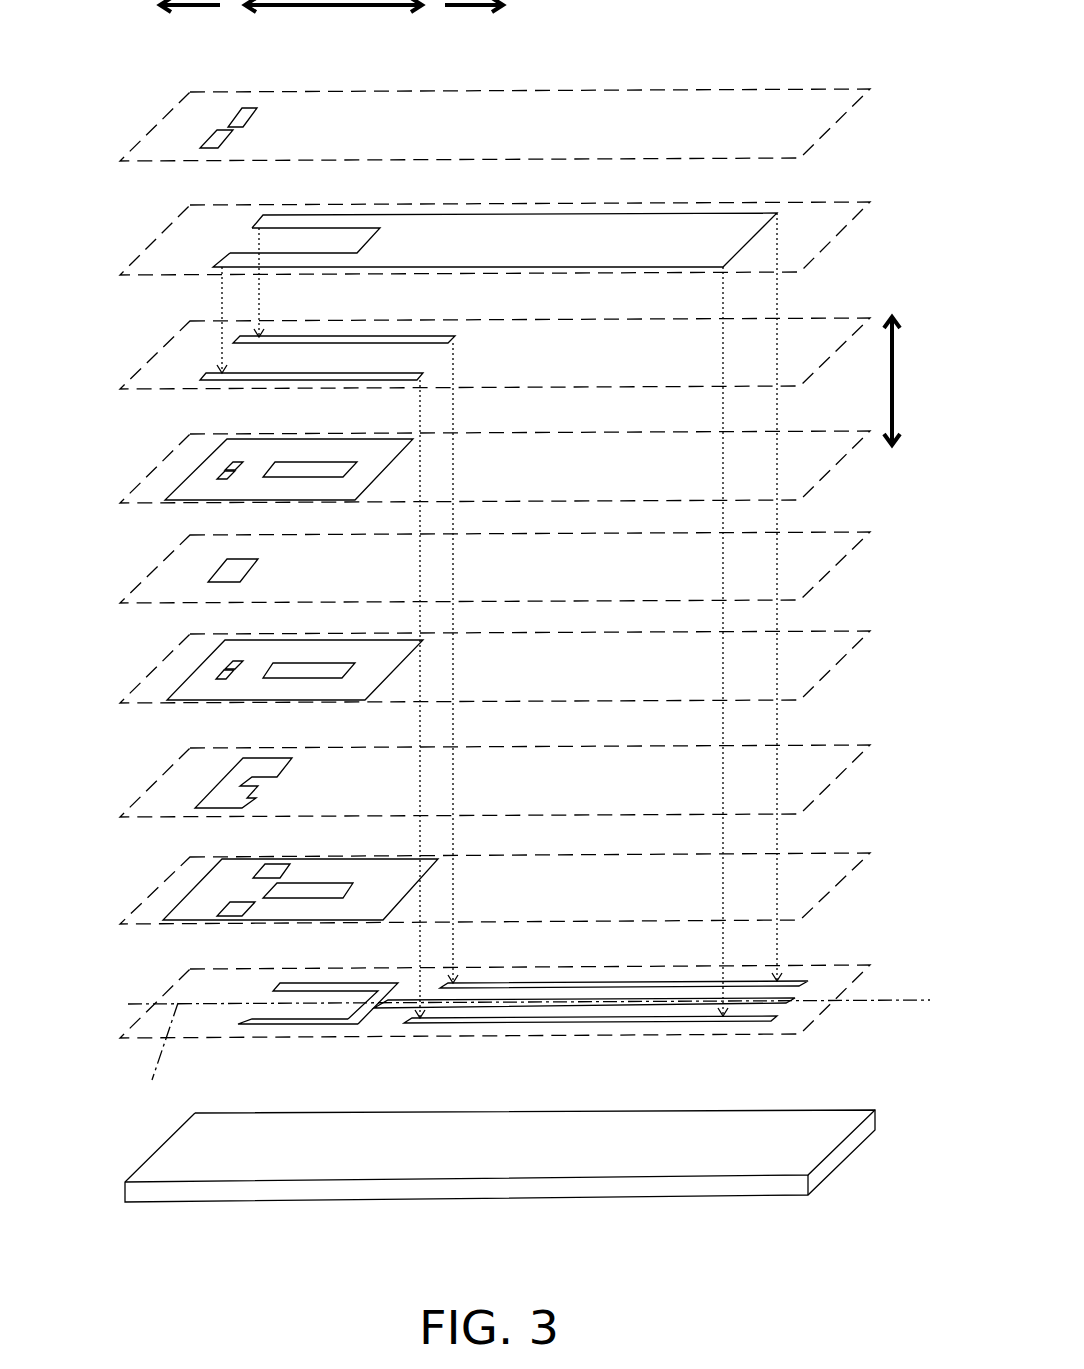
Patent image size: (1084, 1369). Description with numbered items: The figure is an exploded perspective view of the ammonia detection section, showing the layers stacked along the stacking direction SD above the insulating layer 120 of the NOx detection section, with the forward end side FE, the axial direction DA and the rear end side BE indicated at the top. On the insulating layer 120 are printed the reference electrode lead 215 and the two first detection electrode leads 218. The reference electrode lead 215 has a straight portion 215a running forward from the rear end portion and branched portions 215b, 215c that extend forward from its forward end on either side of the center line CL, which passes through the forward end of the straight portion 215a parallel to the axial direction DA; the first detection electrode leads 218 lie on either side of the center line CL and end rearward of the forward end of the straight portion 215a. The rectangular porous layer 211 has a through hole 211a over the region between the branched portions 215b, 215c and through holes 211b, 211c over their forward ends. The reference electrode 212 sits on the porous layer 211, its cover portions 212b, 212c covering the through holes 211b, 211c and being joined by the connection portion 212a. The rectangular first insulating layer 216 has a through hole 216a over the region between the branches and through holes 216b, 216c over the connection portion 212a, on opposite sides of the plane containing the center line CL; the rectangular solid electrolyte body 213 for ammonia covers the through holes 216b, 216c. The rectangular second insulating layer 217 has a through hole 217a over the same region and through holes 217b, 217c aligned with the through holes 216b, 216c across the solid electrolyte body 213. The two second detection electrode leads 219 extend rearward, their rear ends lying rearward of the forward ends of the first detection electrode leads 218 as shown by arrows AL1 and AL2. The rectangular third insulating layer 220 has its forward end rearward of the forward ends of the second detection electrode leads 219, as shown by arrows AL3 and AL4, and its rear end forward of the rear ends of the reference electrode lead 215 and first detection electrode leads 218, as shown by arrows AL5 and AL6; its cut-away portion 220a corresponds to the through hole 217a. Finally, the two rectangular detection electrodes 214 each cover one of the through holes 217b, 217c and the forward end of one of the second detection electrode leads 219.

The insulating layer 120 is at (835, 1158).
The porous layer 211 is at (315, 901).
The through hole 211a is at (345, 892).
The through hole 211b is at (265, 870).
The through hole 211c is at (225, 912).
The reference electrode 212 is at (233, 775).
The connection portion 212a is at (255, 786).
The cover portion 212b is at (262, 767).
The cover portion 212c is at (238, 798).
The solid electrolyte body for ammonia 213 is at (215, 572).
The detection electrodes 214 is at (245, 118).
The reference electrode lead 215 is at (535, 1036).
The straight portion 215a is at (398, 1007).
The branched portion 215b is at (343, 987).
The branched portion 215c is at (250, 1026).
The first insulating layer 216 is at (294, 664).
The through hole 216a is at (345, 672).
The through hole 216b is at (232, 666).
The through hole 216c is at (222, 676).
The second insulating layer 217 is at (293, 464).
The through hole 217a is at (345, 470).
The through hole 217b is at (232, 466).
The through hole 217c is at (222, 474).
The first detection electrode leads 218 is at (805, 985).
The second detection electrode leads 219 is at (240, 340).
The third insulating layer 220 is at (490, 240).
The cut-away portion 220a is at (300, 232).
The arrow AL1 is at (453, 518).
The arrow AL2 is at (420, 517).
The arrow AL3 is at (259, 299).
The arrow AL4 is at (222, 300).
The arrow AL5 is at (778, 615).
The arrow AL6 is at (727, 612).
The stacking direction SD is at (909, 381).
The center line CL is at (529, 1052).
The forward end side FE is at (190, 19).
The axial direction DA is at (333, 19).
The rear end side BE is at (474, 19).